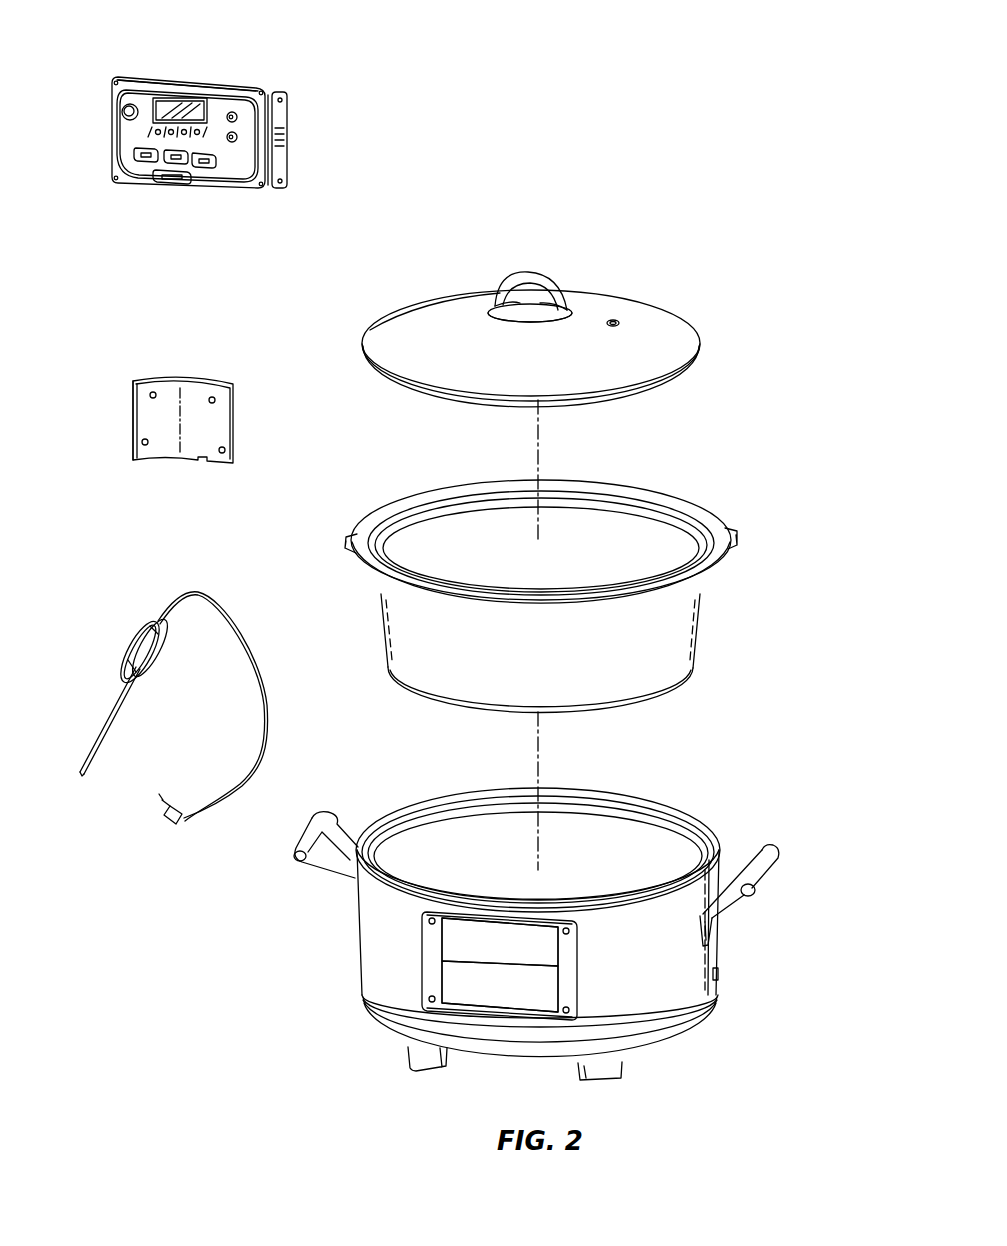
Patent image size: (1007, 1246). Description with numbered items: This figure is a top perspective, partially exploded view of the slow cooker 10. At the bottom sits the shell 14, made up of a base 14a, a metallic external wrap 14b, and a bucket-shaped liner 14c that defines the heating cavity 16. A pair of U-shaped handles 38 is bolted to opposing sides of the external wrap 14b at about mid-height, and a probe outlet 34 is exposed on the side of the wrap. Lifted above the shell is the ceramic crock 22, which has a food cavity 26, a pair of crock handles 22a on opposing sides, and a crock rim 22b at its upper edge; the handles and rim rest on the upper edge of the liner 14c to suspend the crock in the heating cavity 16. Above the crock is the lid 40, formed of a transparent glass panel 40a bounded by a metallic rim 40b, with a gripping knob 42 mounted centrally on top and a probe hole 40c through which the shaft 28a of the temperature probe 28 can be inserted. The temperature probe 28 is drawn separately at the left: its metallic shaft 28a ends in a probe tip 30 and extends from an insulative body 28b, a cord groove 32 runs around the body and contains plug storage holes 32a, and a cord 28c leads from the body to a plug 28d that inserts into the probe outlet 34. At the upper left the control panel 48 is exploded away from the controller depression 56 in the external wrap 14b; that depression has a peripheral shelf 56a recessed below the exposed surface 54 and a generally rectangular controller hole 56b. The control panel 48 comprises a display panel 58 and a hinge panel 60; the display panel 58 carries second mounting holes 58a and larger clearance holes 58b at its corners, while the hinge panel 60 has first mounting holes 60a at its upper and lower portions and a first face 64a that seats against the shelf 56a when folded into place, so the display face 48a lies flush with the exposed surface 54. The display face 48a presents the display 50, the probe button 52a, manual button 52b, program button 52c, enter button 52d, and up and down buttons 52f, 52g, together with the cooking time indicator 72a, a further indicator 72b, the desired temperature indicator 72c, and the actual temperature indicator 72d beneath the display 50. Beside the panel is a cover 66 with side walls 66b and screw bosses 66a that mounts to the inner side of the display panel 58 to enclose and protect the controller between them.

The slow cooker 10 is at (652, 72).
The shell 14 is at (720, 1005).
The base 14a is at (660, 1040).
The external wrap 14b is at (697, 962).
The liner 14c is at (455, 830).
The heating cavity 16 is at (648, 842).
The crock 22 is at (672, 637).
The crock handles 22a is at (355, 530).
The crock rim 22b is at (462, 490).
The food cavity 26 is at (640, 534).
The temperature probe 28 is at (157, 667).
The shaft 28a is at (110, 715).
The body 28b is at (133, 638).
The cord 28c is at (215, 596).
The plug 28d is at (166, 820).
The probe tip 30 is at (78, 776).
The cord groove 32 is at (160, 650).
The plug storage hole 32a is at (134, 652).
The probe outlet 34 is at (720, 975).
The U-shaped handles 38 is at (310, 830).
The lid 40 is at (412, 301).
The glass panel 40a is at (385, 336).
The metallic rim 40b is at (688, 370).
The probe hole 40c is at (618, 322).
The gripping knob 42 is at (518, 275).
The control panel 48 is at (106, 56).
The display face 48a is at (112, 151).
The display 50 is at (184, 97).
The probe button 52a is at (146, 162).
The manual button 52b is at (176, 164).
The program button 52c is at (121, 113).
The enter button 52d is at (168, 184).
The up button 52f is at (238, 117).
The down button 52g is at (238, 137).
The exposed surface 54 is at (372, 948).
The controller depression 56 is at (479, 1020).
The peripheral shelf 56a is at (570, 990).
The controller hole 56b is at (455, 990).
The display panel 58 is at (116, 78).
The second mounting hole 58a is at (110, 92).
The clearance hole 58b is at (263, 90).
The hinge panel 60 is at (288, 160).
The first mounting hole 60a is at (284, 100).
The first face 64a is at (288, 118).
The cover 66 is at (167, 397).
The screw bosses 66a is at (150, 394).
The side walls 66b is at (133, 420).
The cooking time indicator 72a is at (158, 128).
The display segment 72b is at (172, 100).
The desired temperature indicator 72c is at (198, 105).
The actual temperature indicator 72d is at (206, 118).